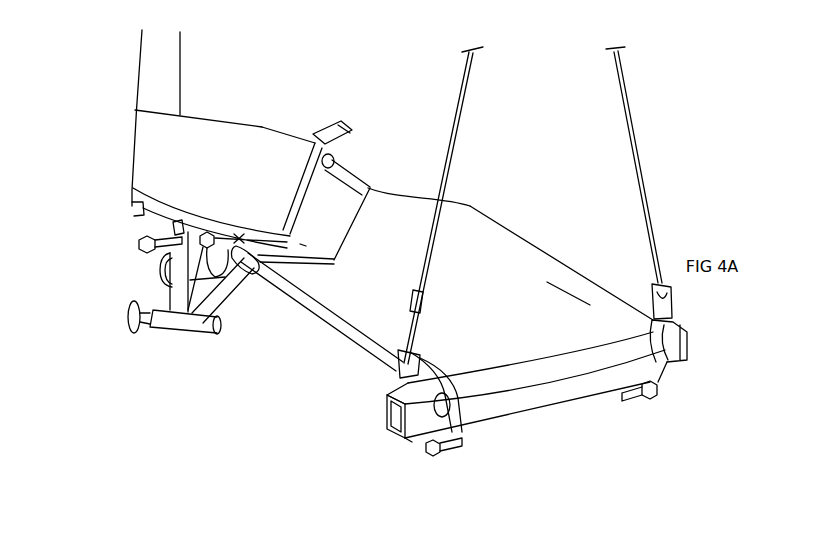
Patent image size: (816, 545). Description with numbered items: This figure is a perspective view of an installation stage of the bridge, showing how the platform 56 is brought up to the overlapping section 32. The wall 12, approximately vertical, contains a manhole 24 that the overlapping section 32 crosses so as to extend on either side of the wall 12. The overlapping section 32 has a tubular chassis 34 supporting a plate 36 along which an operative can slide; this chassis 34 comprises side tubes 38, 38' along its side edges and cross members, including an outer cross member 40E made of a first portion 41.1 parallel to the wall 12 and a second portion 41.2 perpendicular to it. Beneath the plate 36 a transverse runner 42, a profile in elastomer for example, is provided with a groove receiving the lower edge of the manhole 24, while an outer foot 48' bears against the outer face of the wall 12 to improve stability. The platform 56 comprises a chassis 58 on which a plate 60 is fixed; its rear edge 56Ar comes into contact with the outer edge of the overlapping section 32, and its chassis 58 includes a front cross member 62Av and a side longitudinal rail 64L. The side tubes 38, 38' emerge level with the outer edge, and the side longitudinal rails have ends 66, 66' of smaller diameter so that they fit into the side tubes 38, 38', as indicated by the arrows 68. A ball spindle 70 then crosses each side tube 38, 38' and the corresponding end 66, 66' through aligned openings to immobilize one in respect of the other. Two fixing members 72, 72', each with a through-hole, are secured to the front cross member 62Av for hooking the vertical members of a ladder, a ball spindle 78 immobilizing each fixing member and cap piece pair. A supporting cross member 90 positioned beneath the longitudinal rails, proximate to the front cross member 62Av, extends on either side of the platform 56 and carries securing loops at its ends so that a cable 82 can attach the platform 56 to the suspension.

The wall 12 is at (94, 123).
The manhole 24 is at (182, 65).
The plate 36 is at (207, 127).
The overlapping section 32 is at (262, 128).
The ball spindle 70 is at (329, 127).
The side tube 38 is at (355, 138).
The side tube 38' is at (115, 232).
The end of side longitudinal rail 66 is at (370, 194).
The outer cross member 40E is at (300, 182).
The transverse runner 42 is at (130, 210).
The second portion 41.2 is at (228, 228).
The arrows 68 is at (241, 236).
The rear edge 56Ar is at (360, 212).
The chassis 34 is at (124, 281).
The outer foot 48' is at (164, 345).
The end of side longitudinal rail 66' is at (227, 307).
The first portion 41.1 is at (308, 240).
The side longitudinal rail 64L is at (362, 343).
The cable 82 is at (472, 73).
The platform 56 is at (541, 268).
The plate 60 is at (585, 297).
The front cross member 62Av is at (568, 368).
The chassis 58 is at (378, 376).
The supporting cross member 90 is at (411, 443).
The fixing member 72' is at (469, 413).
The ball spindle 78 is at (443, 462).
The fixing member 72 is at (641, 410).